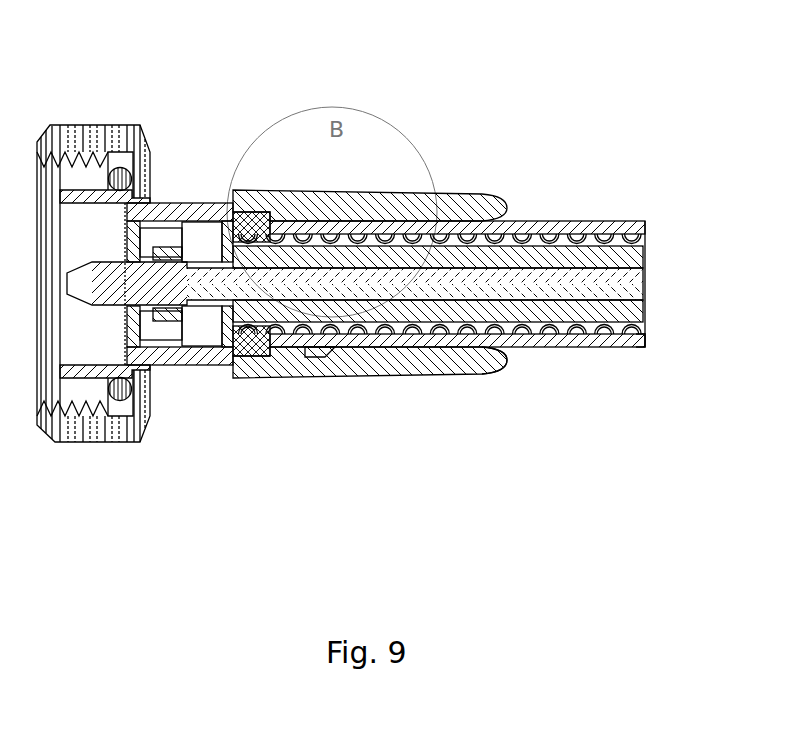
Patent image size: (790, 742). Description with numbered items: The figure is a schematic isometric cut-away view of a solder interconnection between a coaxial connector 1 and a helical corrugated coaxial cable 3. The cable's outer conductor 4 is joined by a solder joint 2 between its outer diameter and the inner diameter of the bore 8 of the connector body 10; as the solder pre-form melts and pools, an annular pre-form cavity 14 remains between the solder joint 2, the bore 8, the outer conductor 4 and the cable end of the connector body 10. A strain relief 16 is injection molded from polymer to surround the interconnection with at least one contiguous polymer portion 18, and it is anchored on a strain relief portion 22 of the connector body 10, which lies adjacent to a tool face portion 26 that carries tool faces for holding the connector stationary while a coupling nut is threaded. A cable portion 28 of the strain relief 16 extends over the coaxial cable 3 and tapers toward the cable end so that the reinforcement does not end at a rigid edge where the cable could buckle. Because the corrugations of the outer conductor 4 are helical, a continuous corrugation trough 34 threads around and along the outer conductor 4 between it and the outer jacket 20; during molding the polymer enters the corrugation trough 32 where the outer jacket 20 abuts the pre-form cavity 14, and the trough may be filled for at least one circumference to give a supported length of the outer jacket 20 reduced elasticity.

The coaxial connector 1 is at (180, 205).
The solder joint 2 is at (250, 360).
The coaxial cable 3 is at (633, 221).
The outer conductor 4 is at (643, 232).
The bore 8 is at (200, 240).
The connector body 10 is at (200, 358).
The pre-form cavity 14 is at (296, 350).
The strain relief 16 is at (482, 200).
The contiguous polymer portion 18 is at (452, 372).
The outer jacket 20 is at (610, 347).
The strain relief portion 22 is at (323, 353).
The tool face portion 26 is at (218, 200).
The cable portion 28 is at (488, 368).
The corrugation trough 32 is at (645, 347).
The corrugation trough 34 is at (610, 232).